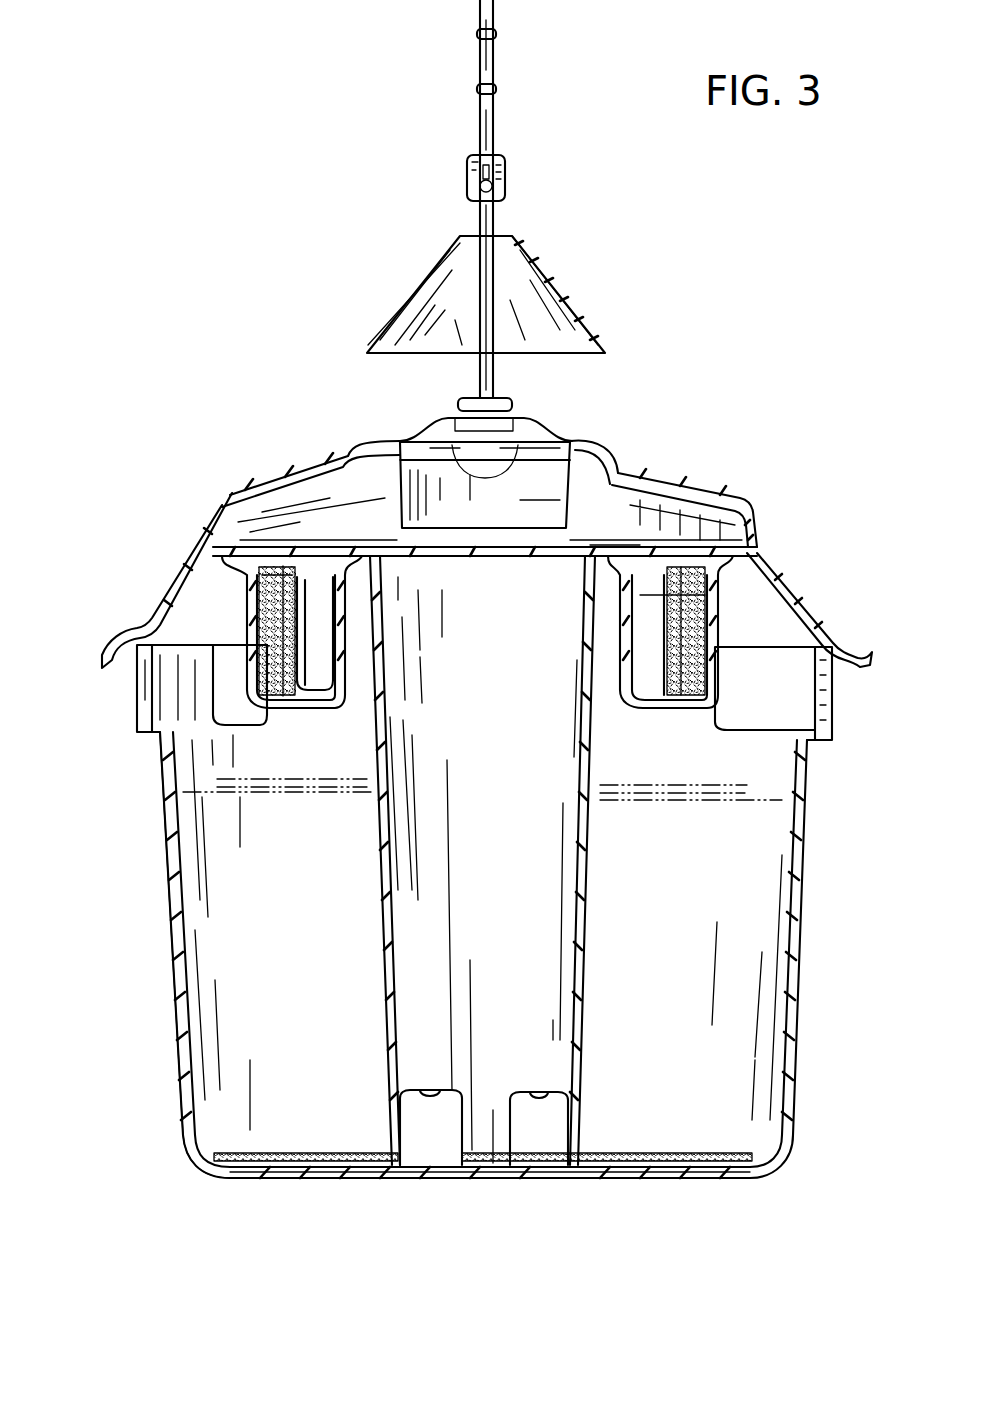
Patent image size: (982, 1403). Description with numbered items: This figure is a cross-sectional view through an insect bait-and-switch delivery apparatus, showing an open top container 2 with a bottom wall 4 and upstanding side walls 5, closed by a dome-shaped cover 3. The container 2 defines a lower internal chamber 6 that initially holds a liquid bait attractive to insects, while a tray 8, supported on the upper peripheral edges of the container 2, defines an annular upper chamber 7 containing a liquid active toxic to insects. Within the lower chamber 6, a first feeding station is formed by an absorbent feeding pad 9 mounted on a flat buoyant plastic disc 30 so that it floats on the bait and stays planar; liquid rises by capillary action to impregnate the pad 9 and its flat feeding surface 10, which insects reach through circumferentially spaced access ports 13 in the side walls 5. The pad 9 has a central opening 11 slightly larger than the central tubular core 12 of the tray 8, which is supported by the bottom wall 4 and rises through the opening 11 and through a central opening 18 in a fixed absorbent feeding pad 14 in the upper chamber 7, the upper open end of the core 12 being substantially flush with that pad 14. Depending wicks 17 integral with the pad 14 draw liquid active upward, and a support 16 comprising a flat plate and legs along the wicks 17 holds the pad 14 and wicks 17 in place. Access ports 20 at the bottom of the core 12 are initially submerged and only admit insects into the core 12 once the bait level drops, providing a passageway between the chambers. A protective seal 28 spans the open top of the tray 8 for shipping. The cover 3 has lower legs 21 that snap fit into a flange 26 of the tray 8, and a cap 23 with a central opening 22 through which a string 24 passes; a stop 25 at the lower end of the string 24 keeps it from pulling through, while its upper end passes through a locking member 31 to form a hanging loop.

The container 2 is at (562, 305).
The cover 3 is at (752, 488).
The bottom wall 4 is at (662, 1180).
The side walls 5 is at (797, 893).
The lower internal chamber 6 is at (667, 937).
The upper chamber 7 is at (655, 637).
The tray 8 is at (682, 708).
The absorbent feeding pad 9 is at (208, 1152).
The flat feeding surface 10 is at (282, 1153).
The central opening 11 is at (590, 1152).
The central tubular core 12 is at (378, 903).
The access ports 13 is at (246, 709).
The fixed absorbent feeding pad 14 is at (255, 570).
The support 16 is at (260, 598).
The wicks 17 is at (256, 602).
The central opening 18 is at (620, 575).
The access ports 20 is at (428, 1090).
The lower legs 21 is at (180, 590).
The central opening 22 is at (553, 470).
The cap 23 is at (592, 440).
The string 24 is at (480, 55).
The stop 25 is at (448, 447).
The flange 26 is at (838, 663).
The protective seal 28 is at (640, 547).
The buoyant plastic disc 30 is at (208, 1168).
The locking member 31 is at (468, 181).